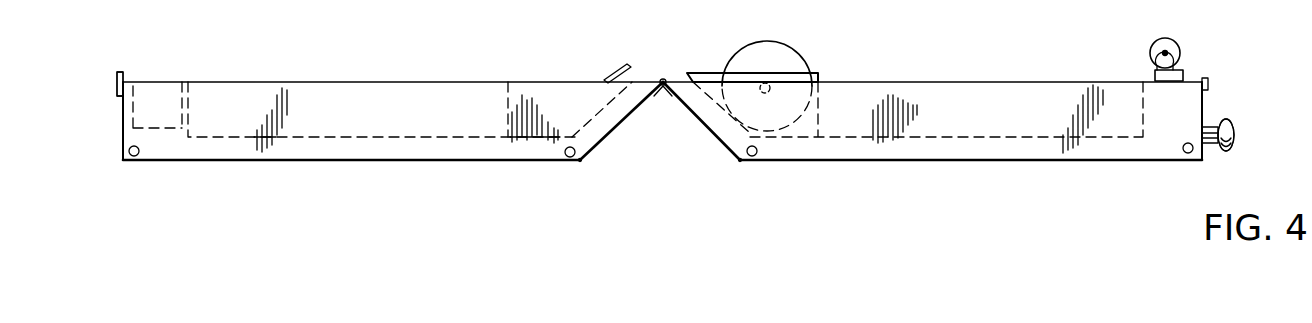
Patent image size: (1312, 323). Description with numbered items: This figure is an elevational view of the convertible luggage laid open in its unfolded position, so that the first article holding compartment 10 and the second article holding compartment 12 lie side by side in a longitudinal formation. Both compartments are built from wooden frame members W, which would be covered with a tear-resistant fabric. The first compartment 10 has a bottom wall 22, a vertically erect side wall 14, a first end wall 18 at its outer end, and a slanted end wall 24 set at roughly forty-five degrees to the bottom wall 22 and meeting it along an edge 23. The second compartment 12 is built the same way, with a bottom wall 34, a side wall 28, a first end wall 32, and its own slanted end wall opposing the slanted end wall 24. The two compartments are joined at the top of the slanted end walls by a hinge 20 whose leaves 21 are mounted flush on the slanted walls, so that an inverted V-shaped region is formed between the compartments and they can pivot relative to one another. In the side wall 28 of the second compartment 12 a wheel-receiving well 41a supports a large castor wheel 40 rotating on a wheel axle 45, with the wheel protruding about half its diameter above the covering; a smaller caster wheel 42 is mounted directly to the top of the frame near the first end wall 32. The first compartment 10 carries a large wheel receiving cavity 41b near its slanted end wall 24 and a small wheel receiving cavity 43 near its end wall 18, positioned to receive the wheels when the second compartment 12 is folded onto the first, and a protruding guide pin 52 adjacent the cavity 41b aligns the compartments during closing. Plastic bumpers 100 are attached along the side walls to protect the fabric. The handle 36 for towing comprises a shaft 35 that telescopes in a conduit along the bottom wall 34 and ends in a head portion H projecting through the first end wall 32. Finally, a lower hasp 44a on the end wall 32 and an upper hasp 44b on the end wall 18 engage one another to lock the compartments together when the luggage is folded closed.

The first article holding compartment 10 is at (373, 163).
The second article holding compartment 12 is at (940, 163).
The side wall 14 is at (427, 140).
The first end wall 18 is at (120, 110).
The hinge 20 is at (663, 78).
The hinge leaf 21 is at (672, 96).
The bottom wall 22 is at (297, 163).
The edge 23 is at (583, 160).
The slanted end wall 24 is at (623, 128).
The side wall 28 is at (992, 143).
The first end wall 32 is at (1203, 155).
The bottom wall 34 is at (1053, 160).
The shaft 35 is at (1205, 125).
The handle 36 is at (1230, 120).
The large castor wheel 40 is at (775, 52).
The wheel-receiving well 41a is at (810, 128).
The large wheel receiving cavity 41b is at (558, 128).
The smaller caster wheel 42 is at (1162, 42).
The small wheel receiving cavity 43 is at (163, 120).
The lower hasp 44a is at (1206, 78).
The upper hasp 44b is at (118, 78).
The wheel axle 45 is at (765, 95).
The guide pin 52 is at (623, 68).
The plastic bumper 100 is at (135, 160).
The wooden frame member W is at (222, 140).
The head portion H is at (1233, 143).